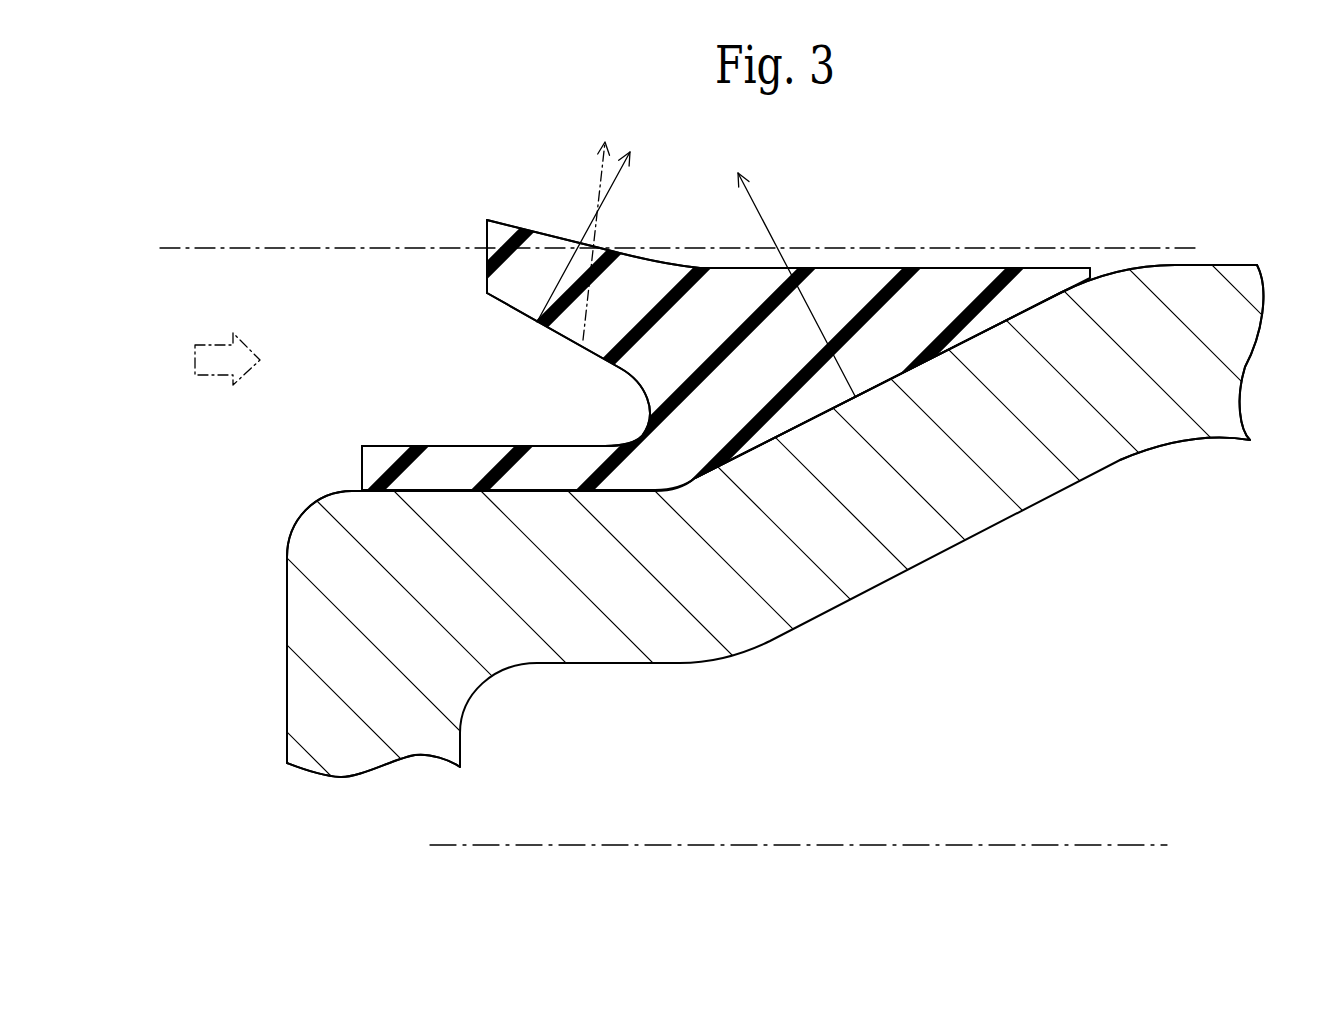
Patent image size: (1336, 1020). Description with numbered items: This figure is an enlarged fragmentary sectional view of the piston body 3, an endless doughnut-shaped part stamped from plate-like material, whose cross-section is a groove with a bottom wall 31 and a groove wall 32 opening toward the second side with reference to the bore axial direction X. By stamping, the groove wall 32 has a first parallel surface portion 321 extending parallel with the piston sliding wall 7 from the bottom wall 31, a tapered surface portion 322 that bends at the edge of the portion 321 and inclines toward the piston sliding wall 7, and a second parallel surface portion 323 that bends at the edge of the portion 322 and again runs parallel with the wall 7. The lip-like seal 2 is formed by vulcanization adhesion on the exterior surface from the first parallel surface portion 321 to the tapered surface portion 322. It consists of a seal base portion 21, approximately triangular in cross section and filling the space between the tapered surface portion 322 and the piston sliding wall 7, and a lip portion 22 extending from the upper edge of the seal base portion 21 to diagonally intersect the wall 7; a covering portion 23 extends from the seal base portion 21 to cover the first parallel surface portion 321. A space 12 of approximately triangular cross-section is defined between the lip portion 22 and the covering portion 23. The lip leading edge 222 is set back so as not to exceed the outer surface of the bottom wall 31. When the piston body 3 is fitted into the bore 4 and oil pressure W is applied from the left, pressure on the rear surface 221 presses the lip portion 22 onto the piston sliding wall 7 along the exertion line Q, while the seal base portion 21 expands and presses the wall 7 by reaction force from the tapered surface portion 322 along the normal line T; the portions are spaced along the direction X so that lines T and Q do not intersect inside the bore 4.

The lip-like seal 2 is at (1053, 268).
The seal base portion 21 is at (860, 267).
The lip portion 22 is at (558, 250).
The rear surface 221 is at (607, 348).
The lip leading edge 222 is at (580, 339).
The covering portion 23 is at (480, 447).
The piston body 3 is at (1068, 483).
The bottom wall 31 is at (285, 708).
The groove wall 32 is at (1246, 368).
The first parallel surface portion 321 is at (450, 490).
The tapered surface portion 322 is at (826, 413).
The second parallel surface portion 323 is at (1228, 265).
The space 12 is at (592, 412).
The bore 4 is at (240, 540).
The piston sliding wall 7 is at (370, 249).
The oil pressure W is at (212, 345).
The bore axial direction X is at (934, 845).
The normal line T is at (765, 221).
The exertion line Q is at (597, 237).